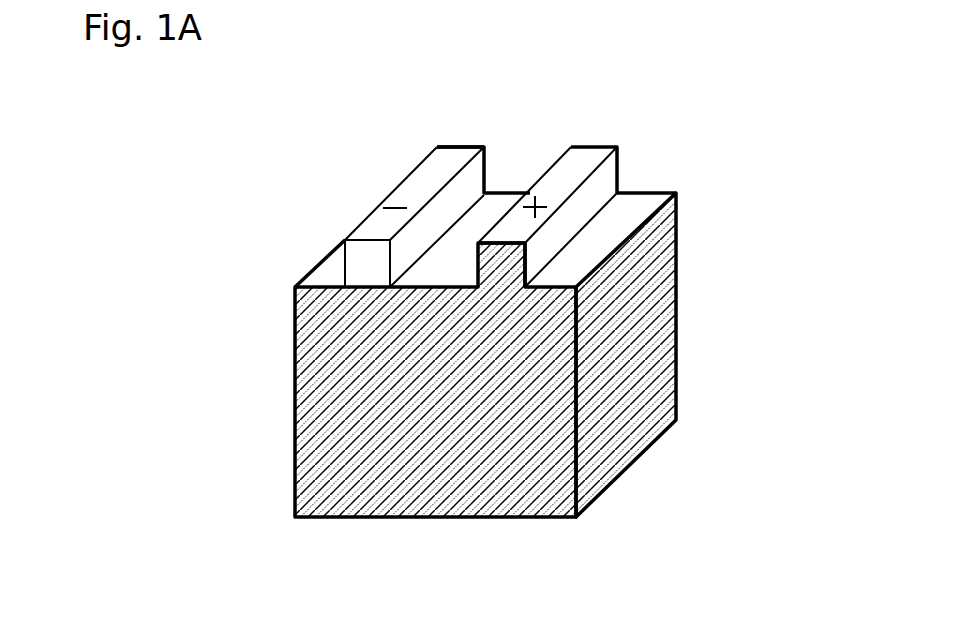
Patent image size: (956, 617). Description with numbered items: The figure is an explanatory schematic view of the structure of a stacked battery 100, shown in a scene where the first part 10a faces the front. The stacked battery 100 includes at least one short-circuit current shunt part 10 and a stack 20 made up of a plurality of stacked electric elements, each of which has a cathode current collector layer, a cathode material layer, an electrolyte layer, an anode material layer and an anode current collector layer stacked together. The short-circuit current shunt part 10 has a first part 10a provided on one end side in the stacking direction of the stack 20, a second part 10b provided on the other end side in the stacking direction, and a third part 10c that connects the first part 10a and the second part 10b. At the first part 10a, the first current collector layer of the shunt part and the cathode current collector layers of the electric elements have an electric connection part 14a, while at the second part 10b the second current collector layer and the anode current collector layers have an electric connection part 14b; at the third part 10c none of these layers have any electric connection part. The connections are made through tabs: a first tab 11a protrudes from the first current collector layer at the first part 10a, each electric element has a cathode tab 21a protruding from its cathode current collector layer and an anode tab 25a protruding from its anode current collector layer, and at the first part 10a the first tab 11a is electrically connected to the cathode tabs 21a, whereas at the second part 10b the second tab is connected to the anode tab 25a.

The stacked battery 100 is at (548, 60).
The short-circuit current shunt part 10 is at (585, 522).
The first part 10a is at (420, 465).
The second part 10b is at (681, 201).
The third part 10c is at (643, 342).
The first tab 11a is at (533, 264).
The electric connection part 14a is at (528, 244).
The electric connection part 14b is at (460, 145).
The stack 20 is at (318, 242).
The cathode tab 21a is at (558, 187).
The anode tab 25a is at (427, 183).